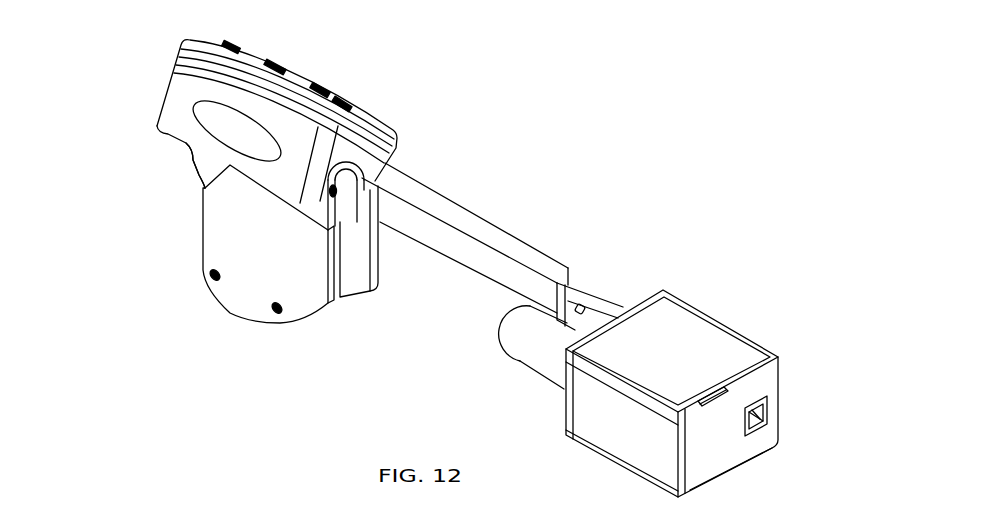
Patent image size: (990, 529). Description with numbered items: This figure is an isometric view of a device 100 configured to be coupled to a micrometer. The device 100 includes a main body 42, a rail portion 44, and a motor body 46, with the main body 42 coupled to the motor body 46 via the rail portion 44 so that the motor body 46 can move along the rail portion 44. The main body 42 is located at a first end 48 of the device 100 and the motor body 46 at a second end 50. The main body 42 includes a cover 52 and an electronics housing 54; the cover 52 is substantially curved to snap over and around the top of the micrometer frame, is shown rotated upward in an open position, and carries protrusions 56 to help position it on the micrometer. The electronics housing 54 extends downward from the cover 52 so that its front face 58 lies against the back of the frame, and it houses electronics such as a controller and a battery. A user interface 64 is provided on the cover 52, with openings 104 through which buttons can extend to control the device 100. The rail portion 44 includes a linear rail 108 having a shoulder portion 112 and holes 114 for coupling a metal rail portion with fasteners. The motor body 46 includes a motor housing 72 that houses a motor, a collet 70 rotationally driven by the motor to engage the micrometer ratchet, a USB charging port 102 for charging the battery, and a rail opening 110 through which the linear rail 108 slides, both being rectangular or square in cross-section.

The device 100 is at (645, 113).
The main body 42 is at (408, 90).
The cover 52 is at (184, 86).
The user interface 64 is at (386, 97).
The openings 104 is at (259, 64).
The first end 48 is at (120, 133).
The protrusions 56 is at (197, 175).
The electronics housing 54 is at (215, 238).
The front face 58 is at (245, 293).
The rail portion 44 is at (532, 181).
The linear rail 108 is at (457, 257).
The shoulder portion 112 is at (566, 288).
The holes 114 is at (583, 306).
The collet 70 is at (523, 349).
The motor body 46 is at (789, 310).
The second end 50 is at (824, 407).
The motor housing 72 is at (698, 473).
The USB charging port 102 is at (701, 393).
The rail opening 110 is at (767, 418).